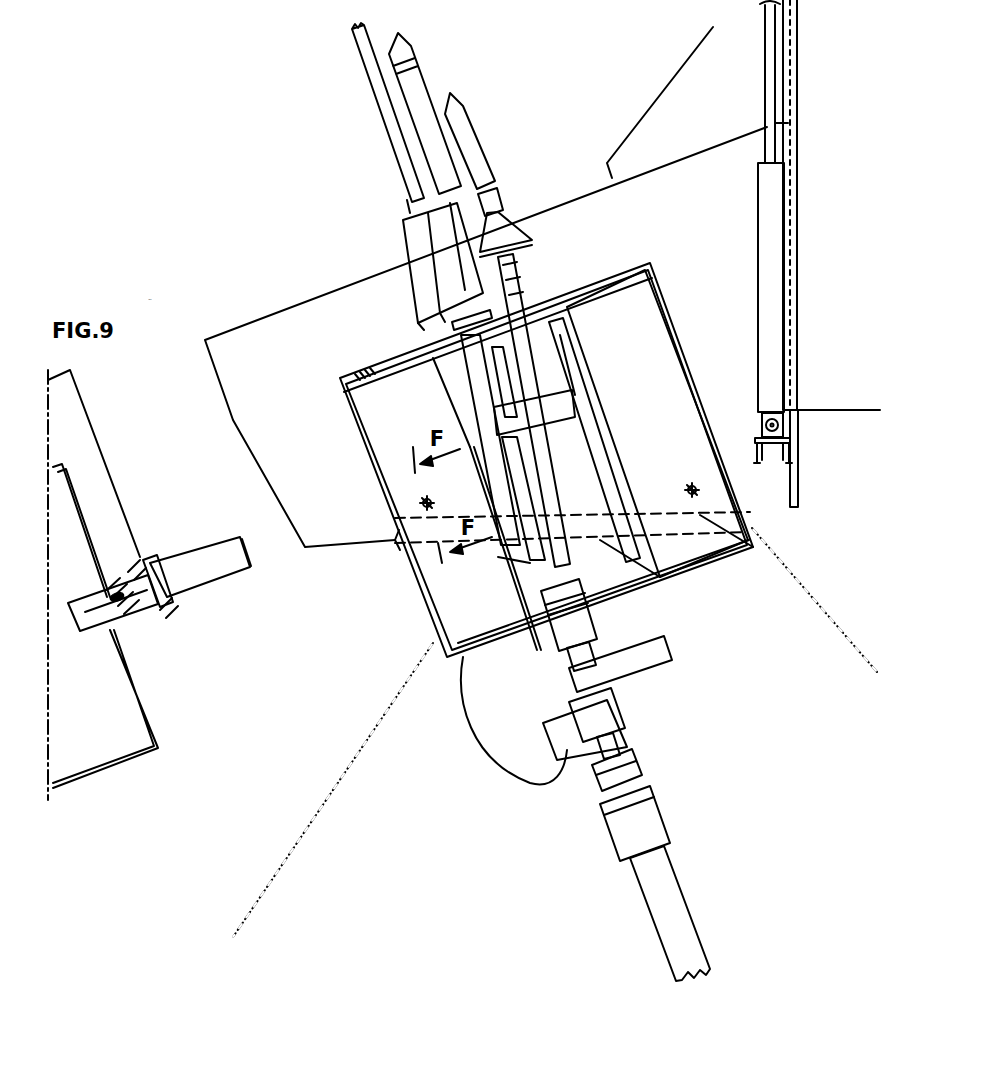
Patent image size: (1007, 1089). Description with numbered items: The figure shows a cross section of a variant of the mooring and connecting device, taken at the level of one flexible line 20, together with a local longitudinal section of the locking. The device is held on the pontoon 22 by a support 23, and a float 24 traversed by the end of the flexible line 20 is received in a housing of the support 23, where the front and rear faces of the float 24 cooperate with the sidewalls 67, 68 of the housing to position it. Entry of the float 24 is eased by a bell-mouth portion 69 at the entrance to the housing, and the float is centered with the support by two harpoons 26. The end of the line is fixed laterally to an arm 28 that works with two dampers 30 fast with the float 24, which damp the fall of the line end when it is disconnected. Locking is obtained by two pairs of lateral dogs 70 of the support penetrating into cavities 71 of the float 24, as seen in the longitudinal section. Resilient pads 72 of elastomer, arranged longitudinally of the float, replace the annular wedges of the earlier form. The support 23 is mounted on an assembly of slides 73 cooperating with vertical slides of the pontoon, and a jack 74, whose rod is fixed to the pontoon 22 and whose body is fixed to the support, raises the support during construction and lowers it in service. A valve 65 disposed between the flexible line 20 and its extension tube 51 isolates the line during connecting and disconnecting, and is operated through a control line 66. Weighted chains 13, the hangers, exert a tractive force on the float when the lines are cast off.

In FIG. 8, the weighted chains 13 is at (848, 645).
In FIG. 8, the flexible line 20 is at (687, 902).
In FIG. 8, the pontoon 22 is at (818, 223).
In FIG. 8, the support 23 is at (664, 216).
In FIG. 9, the support 23 is at (95, 468).
In FIG. 8, the float 24 is at (618, 338).
In FIG. 9, the float 24 is at (150, 710).
In FIG. 8, the harpoons 26 is at (428, 70).
In FIG. 8, the arm 28 is at (468, 137).
In FIG. 8, the dampers 30 is at (520, 272).
In FIG. 8, the extension tube 51 is at (553, 592).
In FIG. 8, the valve 65 is at (620, 717).
In FIG. 8, the control line 66 is at (528, 783).
In FIG. 8, the sidewall 67 is at (375, 477).
In FIG. 8, the sidewall 68 is at (698, 410).
In FIG. 8, the bell-mouth portion 69 is at (395, 547).
In FIG. 8, the dogs 70 is at (427, 503).
In FIG. 9, the dogs 70 is at (130, 556).
In FIG. 9, the cavities 71 is at (90, 617).
In FIG. 8, the resilient pads 72 is at (360, 372).
In FIG. 8, the assembly of slides 73 is at (797, 402).
In FIG. 8, the jack 74 is at (760, 243).